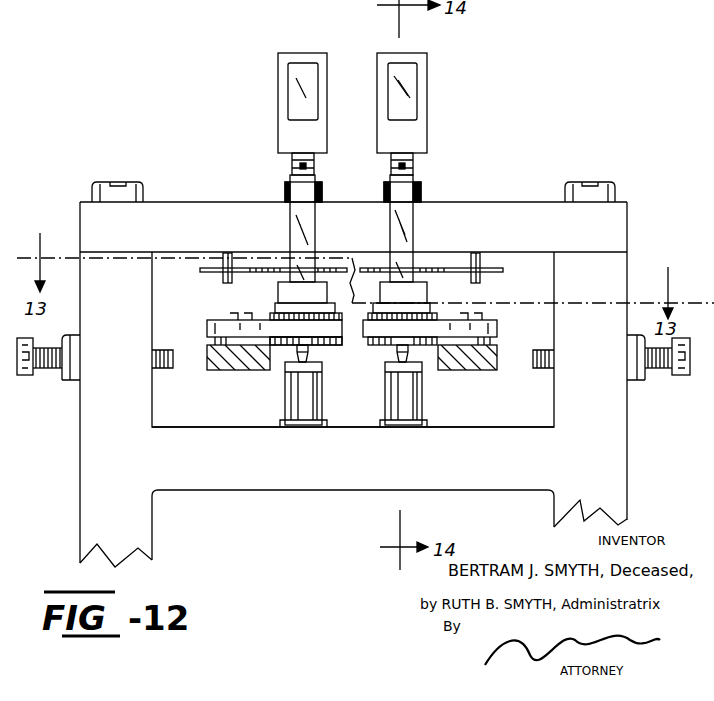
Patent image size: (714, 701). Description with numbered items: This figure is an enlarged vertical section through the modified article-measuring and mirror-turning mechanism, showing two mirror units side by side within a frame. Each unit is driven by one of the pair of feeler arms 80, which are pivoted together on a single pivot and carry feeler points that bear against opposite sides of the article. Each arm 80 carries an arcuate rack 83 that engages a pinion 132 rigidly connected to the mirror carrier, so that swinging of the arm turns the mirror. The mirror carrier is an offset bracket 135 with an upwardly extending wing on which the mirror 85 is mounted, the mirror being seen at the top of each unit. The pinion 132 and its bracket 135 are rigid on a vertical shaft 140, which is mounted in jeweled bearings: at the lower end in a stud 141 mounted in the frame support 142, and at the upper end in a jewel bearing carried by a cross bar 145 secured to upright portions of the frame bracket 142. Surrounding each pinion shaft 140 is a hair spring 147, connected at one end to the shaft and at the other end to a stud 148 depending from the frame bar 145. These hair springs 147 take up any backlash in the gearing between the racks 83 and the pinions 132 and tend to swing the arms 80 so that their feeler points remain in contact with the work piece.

The arm 80 is at (232, 371).
The arcuate rack 83 is at (263, 326).
The mirror 85 is at (308, 90).
The pinion 132 is at (334, 341).
The offset bracket 135 is at (302, 188).
The vertical shaft 140 is at (310, 353).
The stud 141 is at (297, 403).
The frame support 142 is at (353, 449).
The cross bar 145 is at (353, 374).
The hair spring 147 is at (272, 268).
The stud 148 is at (222, 275).